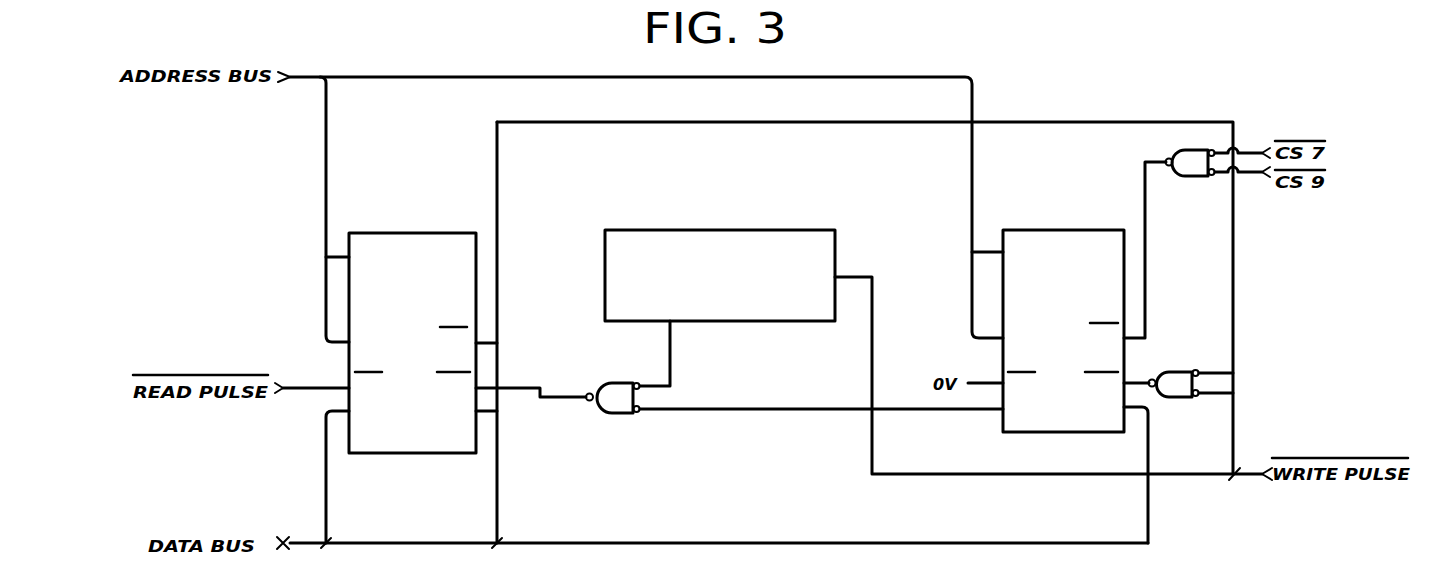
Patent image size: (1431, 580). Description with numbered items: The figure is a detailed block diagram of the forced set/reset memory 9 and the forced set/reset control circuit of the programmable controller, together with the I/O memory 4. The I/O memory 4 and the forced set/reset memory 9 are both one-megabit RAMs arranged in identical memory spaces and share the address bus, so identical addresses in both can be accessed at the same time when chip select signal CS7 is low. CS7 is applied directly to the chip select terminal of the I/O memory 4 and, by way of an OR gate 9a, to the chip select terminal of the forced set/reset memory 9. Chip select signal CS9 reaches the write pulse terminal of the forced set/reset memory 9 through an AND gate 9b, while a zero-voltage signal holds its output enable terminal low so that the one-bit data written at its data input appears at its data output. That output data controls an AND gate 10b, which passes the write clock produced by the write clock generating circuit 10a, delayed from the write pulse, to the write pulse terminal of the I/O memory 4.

The I/O memory 4 is at (426, 233).
The forced set/reset memory 9 is at (1070, 231).
The OR gate 9a is at (1178, 152).
The AND gate 9b is at (1178, 372).
The write clock generating circuit 10a is at (713, 232).
The AND gate 10b is at (610, 383).